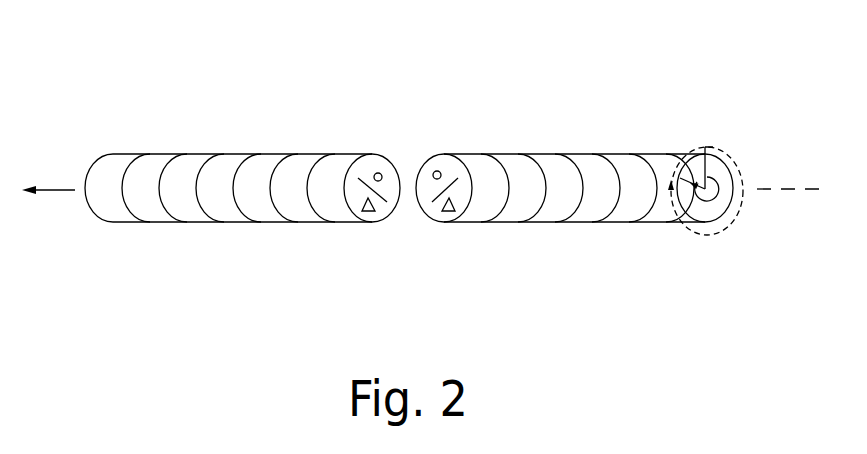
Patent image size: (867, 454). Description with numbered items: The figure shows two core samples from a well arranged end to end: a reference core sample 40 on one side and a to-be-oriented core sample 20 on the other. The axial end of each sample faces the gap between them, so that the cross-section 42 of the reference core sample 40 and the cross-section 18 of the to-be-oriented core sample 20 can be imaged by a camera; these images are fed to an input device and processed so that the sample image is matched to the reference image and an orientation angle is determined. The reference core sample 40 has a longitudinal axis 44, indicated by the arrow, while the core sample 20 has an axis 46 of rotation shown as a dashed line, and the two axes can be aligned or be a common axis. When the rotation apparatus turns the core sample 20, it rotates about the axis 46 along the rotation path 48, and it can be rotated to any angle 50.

The reference core sample 40 is at (180, 86).
The to-be-oriented core sample 20 is at (511, 86).
The cross-section of the reference core sample 42 is at (388, 221).
The cross-section of the to-be-oriented core sample 18 is at (425, 221).
The longitudinal axis 44 is at (62, 191).
The angle 50 is at (715, 168).
The rotation path 48 is at (713, 232).
The axis of rotation 46 is at (762, 188).